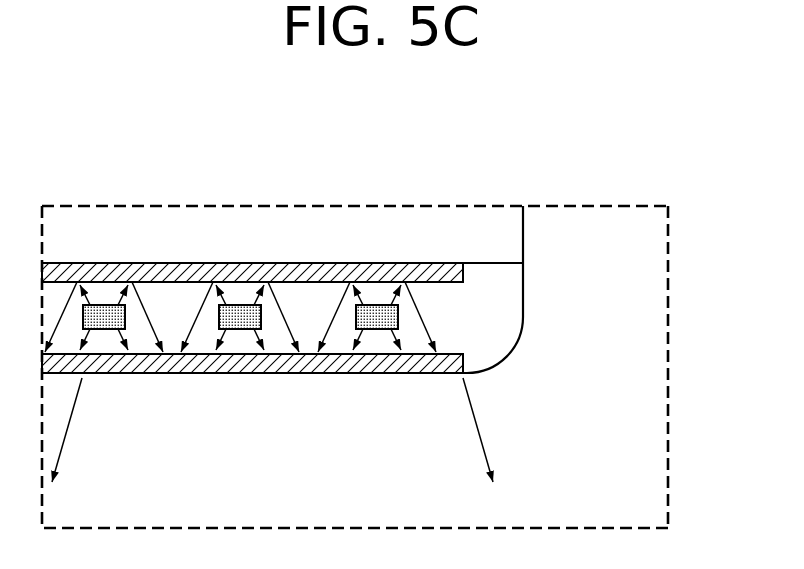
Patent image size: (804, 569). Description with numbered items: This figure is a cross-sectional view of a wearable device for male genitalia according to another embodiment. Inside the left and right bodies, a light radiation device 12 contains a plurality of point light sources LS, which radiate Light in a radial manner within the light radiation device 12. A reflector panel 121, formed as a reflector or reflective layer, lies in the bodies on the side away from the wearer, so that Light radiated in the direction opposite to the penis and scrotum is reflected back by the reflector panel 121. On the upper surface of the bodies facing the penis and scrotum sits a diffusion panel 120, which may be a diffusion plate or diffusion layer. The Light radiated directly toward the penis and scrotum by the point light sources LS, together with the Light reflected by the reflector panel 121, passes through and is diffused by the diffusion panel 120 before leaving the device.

The light radiation device 12 is at (510, 295).
The reflector panel 121 is at (250, 278).
The diffusion panel 120 is at (280, 375).
The point light sources LS is at (398, 318).
The light Light is at (333, 307).